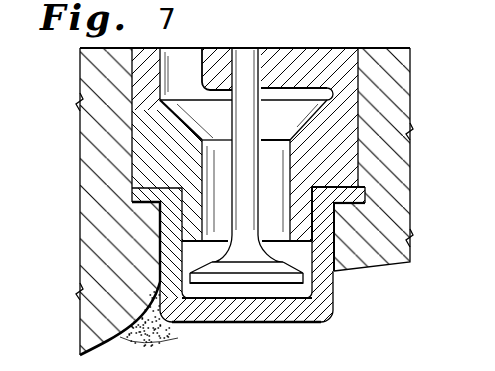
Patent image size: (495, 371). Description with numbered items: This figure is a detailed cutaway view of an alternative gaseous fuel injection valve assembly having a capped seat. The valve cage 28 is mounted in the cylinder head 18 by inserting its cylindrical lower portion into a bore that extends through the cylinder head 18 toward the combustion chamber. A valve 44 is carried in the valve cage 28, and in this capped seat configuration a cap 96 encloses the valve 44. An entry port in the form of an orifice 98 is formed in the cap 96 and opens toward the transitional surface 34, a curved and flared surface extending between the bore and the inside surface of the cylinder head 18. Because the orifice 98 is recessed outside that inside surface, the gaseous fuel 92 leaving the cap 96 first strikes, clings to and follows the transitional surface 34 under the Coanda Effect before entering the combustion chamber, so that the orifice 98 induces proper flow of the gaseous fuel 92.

The cylinder head 18 is at (403, 150).
The valve cage 28 is at (330, 53).
The valve 44 is at (232, 185).
The transitional surface 34 is at (112, 332).
The gaseous fuel 92 is at (156, 325).
The cap 96 is at (340, 299).
The orifice 98 is at (196, 321).